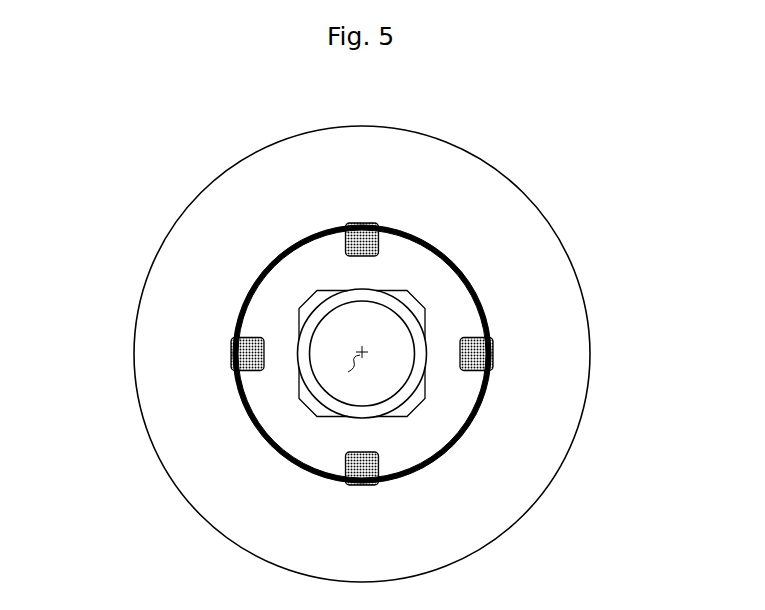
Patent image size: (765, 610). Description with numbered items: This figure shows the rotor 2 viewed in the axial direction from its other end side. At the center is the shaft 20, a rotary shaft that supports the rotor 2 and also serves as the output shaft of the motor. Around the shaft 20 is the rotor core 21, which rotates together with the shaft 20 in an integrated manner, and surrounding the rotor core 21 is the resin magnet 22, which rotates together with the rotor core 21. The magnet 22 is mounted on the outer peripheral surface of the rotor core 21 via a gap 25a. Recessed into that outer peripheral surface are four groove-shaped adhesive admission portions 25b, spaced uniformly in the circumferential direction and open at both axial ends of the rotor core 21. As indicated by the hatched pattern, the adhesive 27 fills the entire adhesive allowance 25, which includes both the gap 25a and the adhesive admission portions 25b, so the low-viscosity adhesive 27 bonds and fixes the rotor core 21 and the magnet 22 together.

The rotor 2 is at (92, 163).
The shaft 20 is at (429, 340).
The rotor core 21 is at (235, 320).
The resin magnet 22 is at (147, 282).
The adhesive allowance 25 is at (469, 354).
The gap 25a is at (493, 377).
The adhesive admission portion 25b is at (493, 345).
The adhesive 27 is at (233, 383).